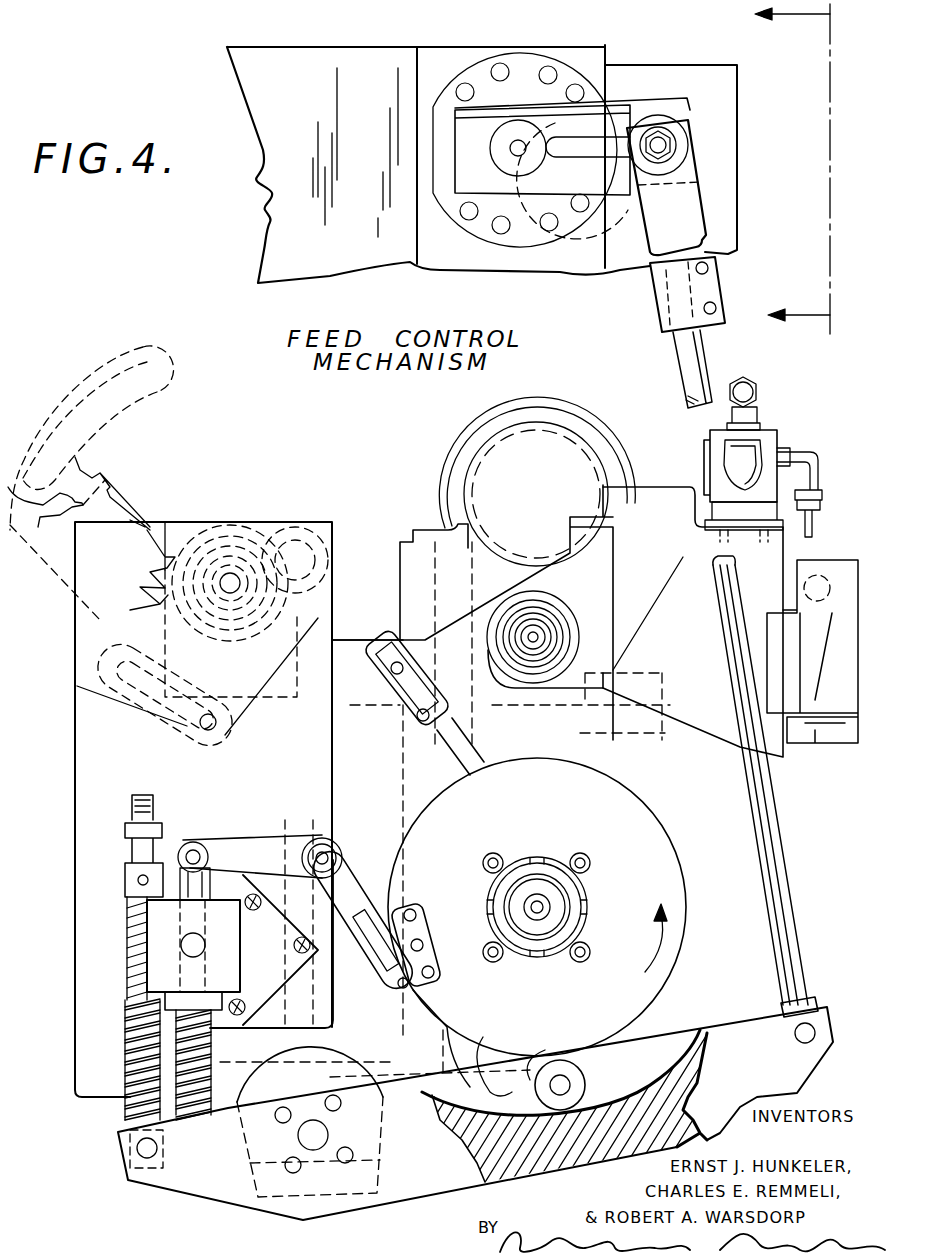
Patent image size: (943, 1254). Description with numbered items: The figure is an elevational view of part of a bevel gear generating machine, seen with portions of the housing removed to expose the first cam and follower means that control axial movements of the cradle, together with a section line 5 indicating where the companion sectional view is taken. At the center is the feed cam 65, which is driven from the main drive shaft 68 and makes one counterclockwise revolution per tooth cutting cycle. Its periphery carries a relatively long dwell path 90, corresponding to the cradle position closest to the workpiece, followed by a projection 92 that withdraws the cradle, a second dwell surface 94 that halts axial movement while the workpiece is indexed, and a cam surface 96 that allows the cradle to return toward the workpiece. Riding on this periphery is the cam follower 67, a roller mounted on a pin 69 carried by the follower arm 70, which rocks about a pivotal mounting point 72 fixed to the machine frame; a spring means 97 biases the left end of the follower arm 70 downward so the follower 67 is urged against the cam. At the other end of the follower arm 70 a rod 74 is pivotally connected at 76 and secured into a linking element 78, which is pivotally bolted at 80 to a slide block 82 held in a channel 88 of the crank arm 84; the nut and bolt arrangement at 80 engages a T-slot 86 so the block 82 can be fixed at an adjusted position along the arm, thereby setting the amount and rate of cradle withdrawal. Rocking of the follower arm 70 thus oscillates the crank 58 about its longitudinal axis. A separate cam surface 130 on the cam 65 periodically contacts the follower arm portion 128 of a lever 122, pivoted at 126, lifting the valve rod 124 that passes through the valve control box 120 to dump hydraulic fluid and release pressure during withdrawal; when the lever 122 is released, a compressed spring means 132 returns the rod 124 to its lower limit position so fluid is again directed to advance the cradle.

The section line 5- 5 is at (792, 169).
The crank 58 is at (560, 245).
The cam 65 is at (598, 826).
The cam follower 67 is at (586, 1083).
The main drive shaft 68 is at (555, 910).
The pin 69 is at (556, 1090).
The follower arm 70 is at (420, 1162).
The pivotal mounting point 72 is at (328, 1134).
The rod 74 is at (702, 360).
The pivotal connection 76 is at (810, 1031).
The linking element 78 is at (714, 290).
The nut and bolt arrangement 80 is at (690, 155).
The slide block 82 is at (680, 118).
The crank arm 84 is at (676, 100).
The T-slot 86 is at (578, 148).
The channel 88 is at (600, 118).
The dwell path 90 is at (407, 812).
The projection 92 is at (538, 1062).
The dwell surface 94 is at (478, 1062).
The cam surface 96 is at (452, 1040).
The spring means 97 is at (118, 1068).
The valve control box 120 is at (226, 955).
The lever 122 is at (255, 860).
The valve rod 124 is at (250, 848).
The pivotal mounting 126 is at (335, 825).
The follower arm portion 128 is at (340, 805).
The cam surface 130 is at (418, 925).
The spring means 132 is at (208, 1047).